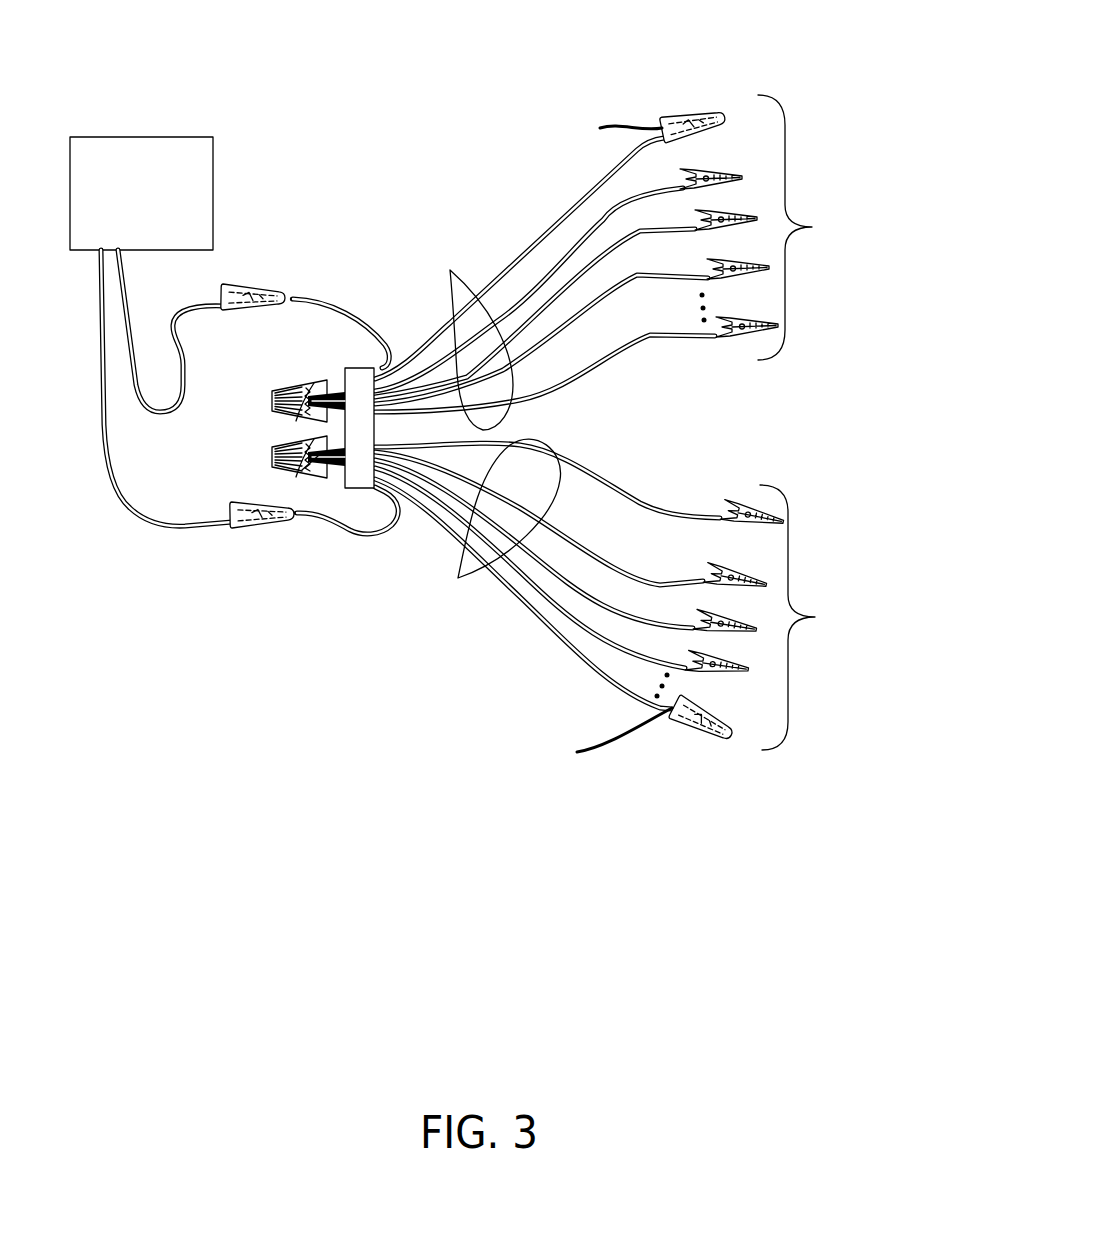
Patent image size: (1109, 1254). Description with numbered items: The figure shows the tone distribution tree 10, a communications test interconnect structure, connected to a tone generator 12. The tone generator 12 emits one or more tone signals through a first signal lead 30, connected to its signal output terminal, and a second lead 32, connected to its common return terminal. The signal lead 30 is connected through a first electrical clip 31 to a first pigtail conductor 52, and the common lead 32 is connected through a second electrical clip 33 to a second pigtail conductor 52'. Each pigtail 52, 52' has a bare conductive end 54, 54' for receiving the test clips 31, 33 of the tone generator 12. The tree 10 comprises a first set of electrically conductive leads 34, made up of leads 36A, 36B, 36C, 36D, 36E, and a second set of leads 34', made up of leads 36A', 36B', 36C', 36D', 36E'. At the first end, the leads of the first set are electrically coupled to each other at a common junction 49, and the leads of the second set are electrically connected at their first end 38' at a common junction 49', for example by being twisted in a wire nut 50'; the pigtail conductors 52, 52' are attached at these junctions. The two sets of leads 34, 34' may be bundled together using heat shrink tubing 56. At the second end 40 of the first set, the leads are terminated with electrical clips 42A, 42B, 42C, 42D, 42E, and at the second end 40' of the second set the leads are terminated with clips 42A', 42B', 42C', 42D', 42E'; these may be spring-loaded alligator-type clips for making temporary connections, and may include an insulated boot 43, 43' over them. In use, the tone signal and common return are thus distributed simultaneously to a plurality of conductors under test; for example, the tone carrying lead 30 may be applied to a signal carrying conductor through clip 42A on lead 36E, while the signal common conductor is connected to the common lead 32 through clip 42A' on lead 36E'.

The tone distribution tree 10 is at (530, 68).
The tone generator 12 is at (142, 136).
The first signal lead 30 is at (128, 300).
The first electrical clip 31 is at (250, 292).
The second lead 32 is at (130, 518).
The second electrical clip 33 is at (257, 517).
The first set of electrically conductive leads 34 is at (441, 303).
The second set of leads 34' is at (459, 548).
The electrically conductive lead 36A is at (519, 258).
The electrically conductive lead 36B is at (529, 279).
The electrically conductive lead 36C is at (535, 302).
The electrically conductive lead 36D is at (541, 330).
The electrically conductive lead 36E is at (545, 363).
The lead 36A' is at (547, 480).
The lead 36B' is at (539, 518).
The lead 36C' is at (534, 546).
The lead 36D' is at (530, 568).
The lead 36E' is at (523, 594).
The first end of the second set of leads 38' is at (425, 560).
The second end of the tone distribution tree 40 is at (834, 195).
The second end of the second set of leads 40' is at (755, 647).
The electrical clip 42A is at (656, 113).
The electrical clip 42B is at (722, 164).
The electrical clip 42C is at (734, 207).
The electrical clip 42D is at (746, 255).
The electrical clip 42E is at (750, 313).
The electrical clip 42A' is at (754, 496).
The clip 42B' is at (741, 568).
The clip 42C' is at (744, 623).
The clip 42D' is at (735, 680).
The clip 42E' is at (714, 735).
The insulated boot 43 is at (611, 134).
The insulated boot 43' is at (599, 738).
The common junction 49 is at (298, 380).
The common junction 49' is at (285, 478).
The wire nut 50' is at (286, 445).
The first pigtail conductor 52 is at (352, 323).
The second pigtail conductor 52' is at (347, 531).
The bare conductive end 54 is at (322, 279).
The bare conductive end 54' is at (273, 549).
The heat shrink tubing 56 is at (360, 368).